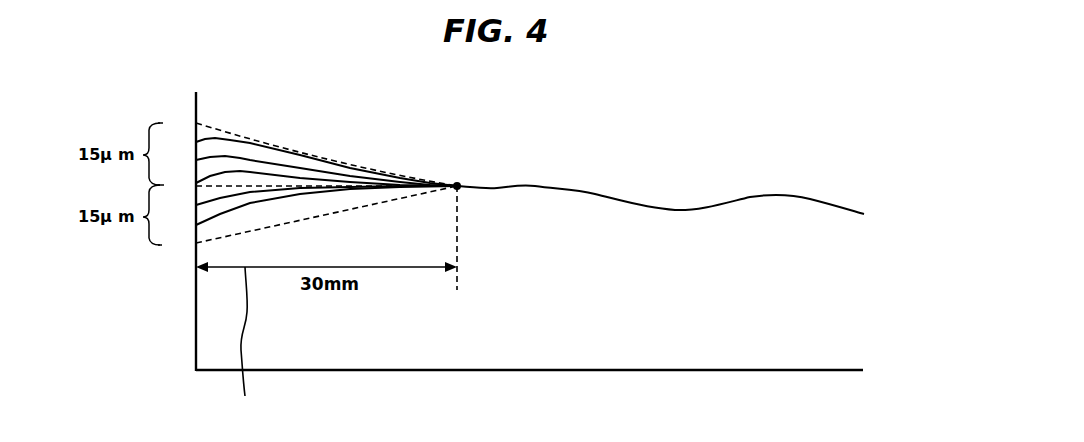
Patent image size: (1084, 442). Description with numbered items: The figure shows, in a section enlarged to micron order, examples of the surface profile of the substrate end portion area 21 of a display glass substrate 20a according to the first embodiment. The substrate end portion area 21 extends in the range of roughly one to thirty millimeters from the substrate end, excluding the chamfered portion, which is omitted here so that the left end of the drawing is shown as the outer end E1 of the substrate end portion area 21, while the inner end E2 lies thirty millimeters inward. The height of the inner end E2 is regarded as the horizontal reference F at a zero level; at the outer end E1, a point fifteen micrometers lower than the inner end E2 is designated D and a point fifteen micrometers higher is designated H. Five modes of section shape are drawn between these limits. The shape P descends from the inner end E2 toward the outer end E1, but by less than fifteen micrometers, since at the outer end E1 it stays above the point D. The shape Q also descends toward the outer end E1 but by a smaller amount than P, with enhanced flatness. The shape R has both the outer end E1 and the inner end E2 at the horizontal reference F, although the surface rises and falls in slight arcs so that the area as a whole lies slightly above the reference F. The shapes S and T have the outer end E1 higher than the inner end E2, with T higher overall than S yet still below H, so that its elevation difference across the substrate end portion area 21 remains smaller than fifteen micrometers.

The display glass substrate 20a is at (848, 291).
The substrate end portion area 21 is at (245, 340).
The outer end E1 is at (196, 318).
The inner end E2 is at (457, 226).
The point 15 μm higher than the inner end H is at (310, 149).
The horizontal reference F is at (311, 184).
The point 15 μm lower than the inner end D is at (310, 220).
The section shape T is at (318, 159).
The section shape S is at (319, 169).
The section shape R is at (319, 182).
The section shape Q is at (318, 200).
The section shape P is at (319, 210).